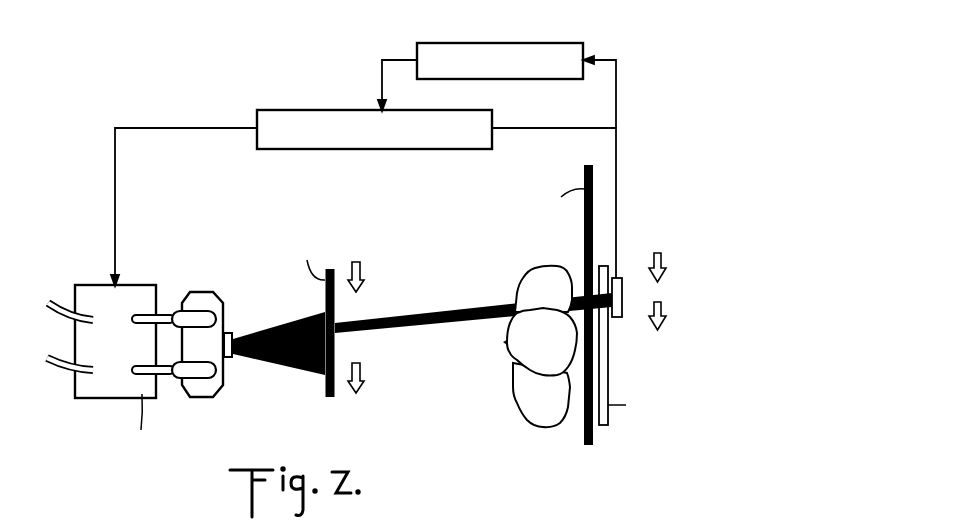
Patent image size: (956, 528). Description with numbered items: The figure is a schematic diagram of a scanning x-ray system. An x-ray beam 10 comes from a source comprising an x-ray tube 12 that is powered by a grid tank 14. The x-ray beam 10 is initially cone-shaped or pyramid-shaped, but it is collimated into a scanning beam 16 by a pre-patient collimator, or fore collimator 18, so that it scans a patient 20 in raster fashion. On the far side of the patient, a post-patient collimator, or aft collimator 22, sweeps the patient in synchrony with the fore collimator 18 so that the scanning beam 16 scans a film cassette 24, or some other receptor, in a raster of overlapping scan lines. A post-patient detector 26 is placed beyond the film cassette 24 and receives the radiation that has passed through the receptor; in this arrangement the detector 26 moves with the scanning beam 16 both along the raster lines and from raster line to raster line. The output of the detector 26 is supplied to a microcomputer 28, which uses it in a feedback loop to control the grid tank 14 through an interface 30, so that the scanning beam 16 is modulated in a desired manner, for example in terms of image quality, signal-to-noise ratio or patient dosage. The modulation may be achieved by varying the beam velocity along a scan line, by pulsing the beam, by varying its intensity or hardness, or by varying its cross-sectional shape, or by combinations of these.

The x-ray beam 10 is at (277, 363).
The x-ray tube 12 is at (207, 389).
The grid tank 14 is at (142, 394).
The scanning beam 16 is at (477, 325).
The pre-patient collimator (fore collimator) 18 is at (330, 397).
The patient 20 is at (542, 412).
The post-patient collimator (aft collimator) 22 is at (589, 445).
The film cassette 24 is at (602, 427).
The post-patient detector 26 is at (617, 318).
The microcomputer 28 is at (539, 43).
The interface 30 is at (458, 110).